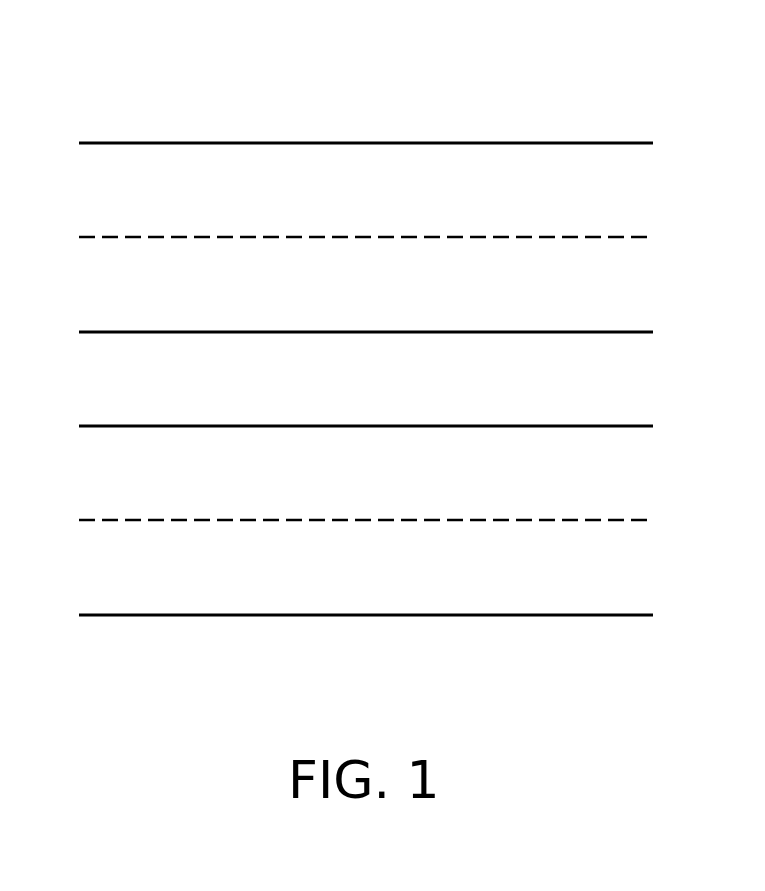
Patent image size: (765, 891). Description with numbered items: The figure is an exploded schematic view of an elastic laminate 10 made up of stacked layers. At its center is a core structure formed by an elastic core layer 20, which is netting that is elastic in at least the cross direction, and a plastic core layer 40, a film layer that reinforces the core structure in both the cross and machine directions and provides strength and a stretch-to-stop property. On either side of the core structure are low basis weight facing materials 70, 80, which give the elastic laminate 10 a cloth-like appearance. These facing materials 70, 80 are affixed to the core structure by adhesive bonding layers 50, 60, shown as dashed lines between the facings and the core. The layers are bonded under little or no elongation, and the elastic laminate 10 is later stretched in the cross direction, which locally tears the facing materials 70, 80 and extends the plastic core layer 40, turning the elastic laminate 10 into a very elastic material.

The elastic laminate 10 is at (97, 85).
The facing material 70 is at (626, 143).
The adhesive bonding layer 50 is at (626, 237).
The elastic core layer 20 is at (626, 332).
The plastic core layer 40 is at (626, 426).
The adhesive bonding layer 60 is at (626, 520).
The facing material 80 is at (626, 615).